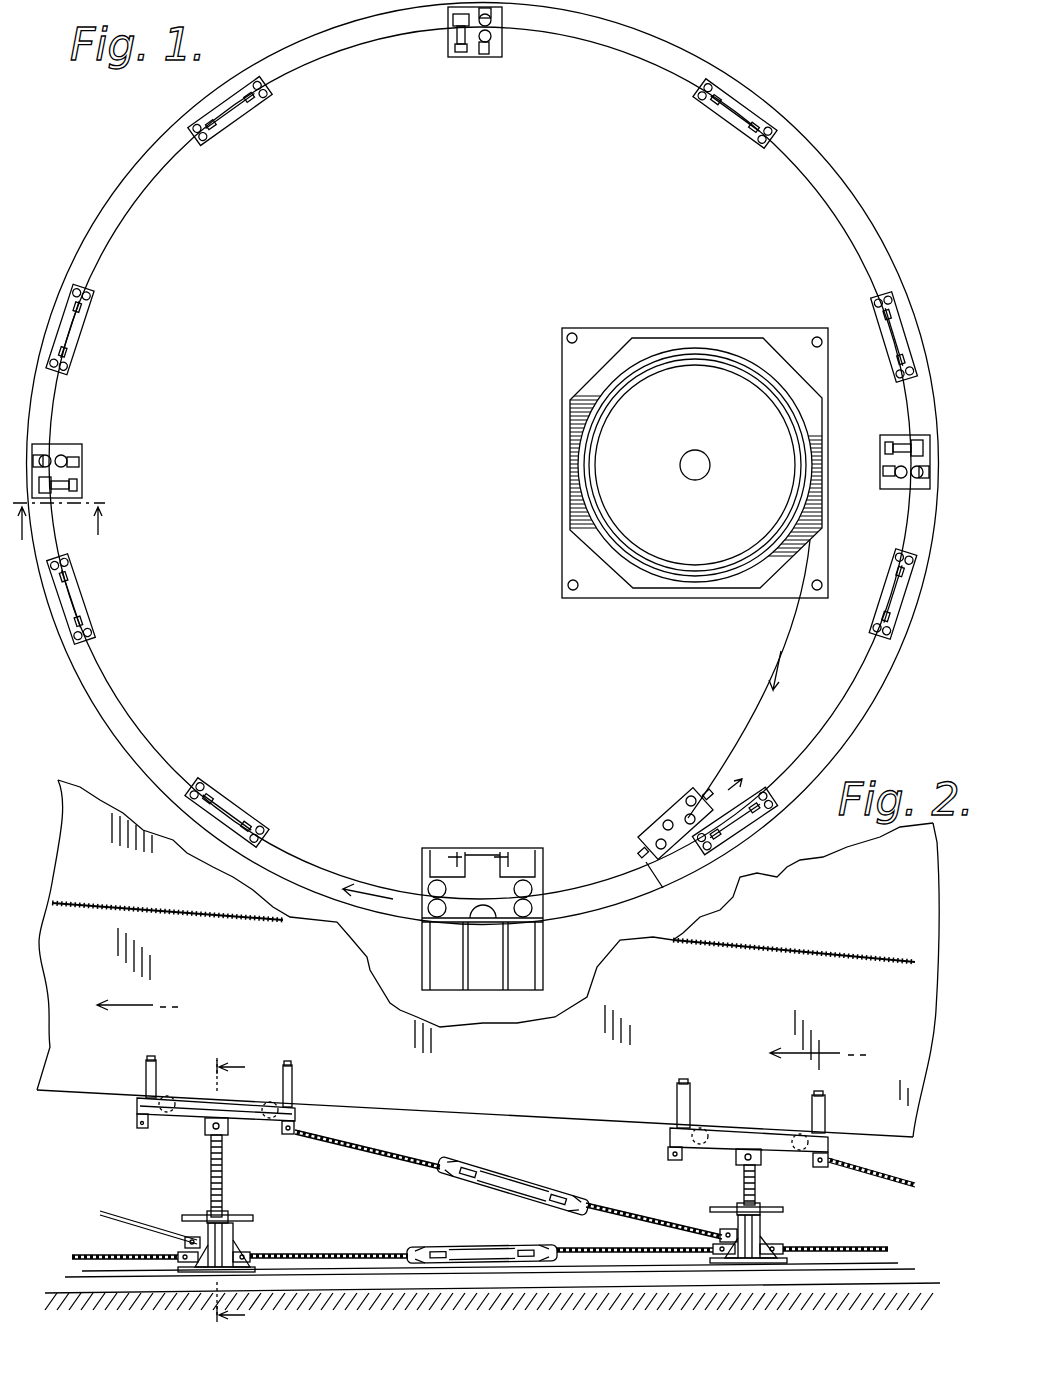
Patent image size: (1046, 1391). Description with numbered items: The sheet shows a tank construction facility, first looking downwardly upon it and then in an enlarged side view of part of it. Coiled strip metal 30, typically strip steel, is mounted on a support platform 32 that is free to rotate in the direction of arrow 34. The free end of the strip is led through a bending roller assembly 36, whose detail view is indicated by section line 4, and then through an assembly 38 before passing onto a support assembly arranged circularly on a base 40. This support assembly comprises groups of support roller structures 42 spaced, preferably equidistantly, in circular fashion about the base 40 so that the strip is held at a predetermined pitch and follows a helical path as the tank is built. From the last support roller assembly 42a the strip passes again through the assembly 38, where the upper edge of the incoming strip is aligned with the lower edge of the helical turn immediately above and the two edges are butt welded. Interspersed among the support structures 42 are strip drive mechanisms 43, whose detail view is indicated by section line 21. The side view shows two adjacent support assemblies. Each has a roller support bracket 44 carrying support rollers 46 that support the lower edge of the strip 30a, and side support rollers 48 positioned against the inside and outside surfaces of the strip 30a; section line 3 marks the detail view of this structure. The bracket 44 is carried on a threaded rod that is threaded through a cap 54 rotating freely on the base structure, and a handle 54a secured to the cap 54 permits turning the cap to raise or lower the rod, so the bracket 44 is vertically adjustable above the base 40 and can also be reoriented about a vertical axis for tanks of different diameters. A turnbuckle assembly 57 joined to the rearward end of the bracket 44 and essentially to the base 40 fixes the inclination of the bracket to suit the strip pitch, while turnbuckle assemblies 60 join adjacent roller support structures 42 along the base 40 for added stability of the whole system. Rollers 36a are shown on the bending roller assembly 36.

In FIG. 1, the section line 21- 21 is at (62, 534).
In FIG. 1, the coiled strip metal 30 is at (667, 440).
In FIG. 2, the strip 30a is at (794, 965).
In FIG. 1, the support platform 32 is at (667, 470).
In FIG. 1, the arrow 34 is at (734, 472).
In FIG. 1, the bending roller assembly 36 is at (675, 799).
In FIG. 1, the carriage rollers 36a is at (663, 825).
In FIG. 1, the assembly 38 is at (517, 834).
In FIG. 1, the base 40 is at (303, 86).
In FIG. 2, the base 40 is at (908, 1277).
In FIG. 1, the support roller structure 42 is at (84, 325).
In FIG. 2, the support roller structure 42 is at (503, 1150).
In FIG. 1, the last support roller assembly 42a is at (769, 786).
In FIG. 1, the strip drive mechanism 43 is at (473, 58).
In FIG. 2, the roller support bracket 44 is at (192, 1100).
In FIG. 2, the support rollers 46 is at (166, 1096).
In FIG. 2, the side support rollers 48 is at (146, 1072).
In FIG. 2, the cap 54 is at (207, 1212).
In FIG. 2, the handle 54a is at (188, 1218).
In FIG. 2, the turnbuckle assembly 57 is at (503, 1159).
In FIG. 2, the turnbuckle assemblies 60 is at (458, 1234).
In FIG. 2, the section line 3- 3 is at (240, 1193).
In FIG. 1, the section line 4- 4 is at (703, 836).